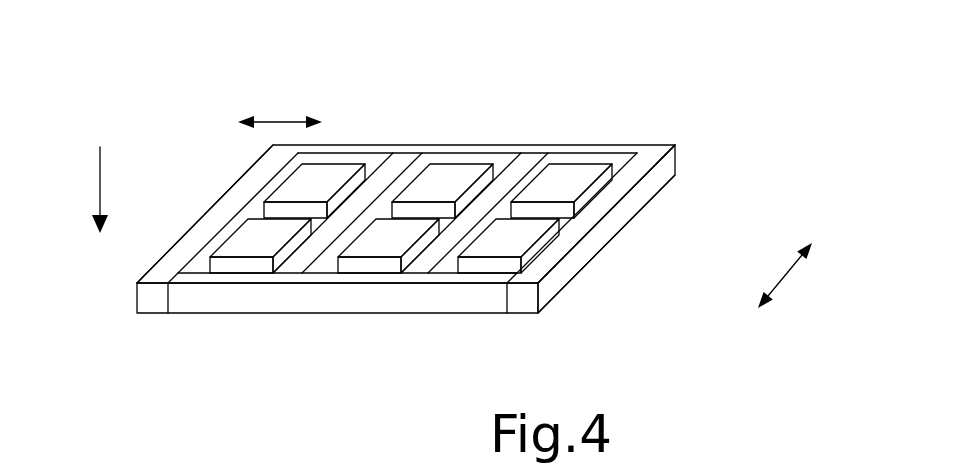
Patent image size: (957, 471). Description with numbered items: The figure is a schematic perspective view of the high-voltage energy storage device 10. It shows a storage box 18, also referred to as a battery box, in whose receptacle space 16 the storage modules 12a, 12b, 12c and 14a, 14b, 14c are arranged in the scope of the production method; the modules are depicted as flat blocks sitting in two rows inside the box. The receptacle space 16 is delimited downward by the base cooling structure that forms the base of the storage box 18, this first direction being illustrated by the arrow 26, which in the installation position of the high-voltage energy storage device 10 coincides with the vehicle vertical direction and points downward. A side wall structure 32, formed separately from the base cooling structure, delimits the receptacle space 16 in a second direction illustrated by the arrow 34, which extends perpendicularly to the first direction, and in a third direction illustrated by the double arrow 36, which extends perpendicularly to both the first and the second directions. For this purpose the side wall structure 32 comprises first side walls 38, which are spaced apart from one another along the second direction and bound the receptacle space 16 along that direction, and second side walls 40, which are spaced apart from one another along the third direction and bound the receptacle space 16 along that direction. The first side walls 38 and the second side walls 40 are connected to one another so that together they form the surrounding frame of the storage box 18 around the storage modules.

The high-voltage energy storage device 10 is at (417, 231).
The storage module 12a is at (314, 180).
The storage module 12b is at (457, 178).
The storage module 12c is at (568, 177).
The storage module 14a is at (253, 245).
The storage module 14b is at (383, 245).
The storage module 14c is at (508, 245).
The receptacle space 16 is at (602, 152).
The storage box 18 is at (656, 220).
The arrow 26 is at (100, 183).
The side wall structure 32 is at (593, 268).
The arrow 34 is at (787, 278).
The double arrow 36 is at (301, 118).
The first side walls 38 is at (431, 231).
The second side walls 40 is at (172, 257).